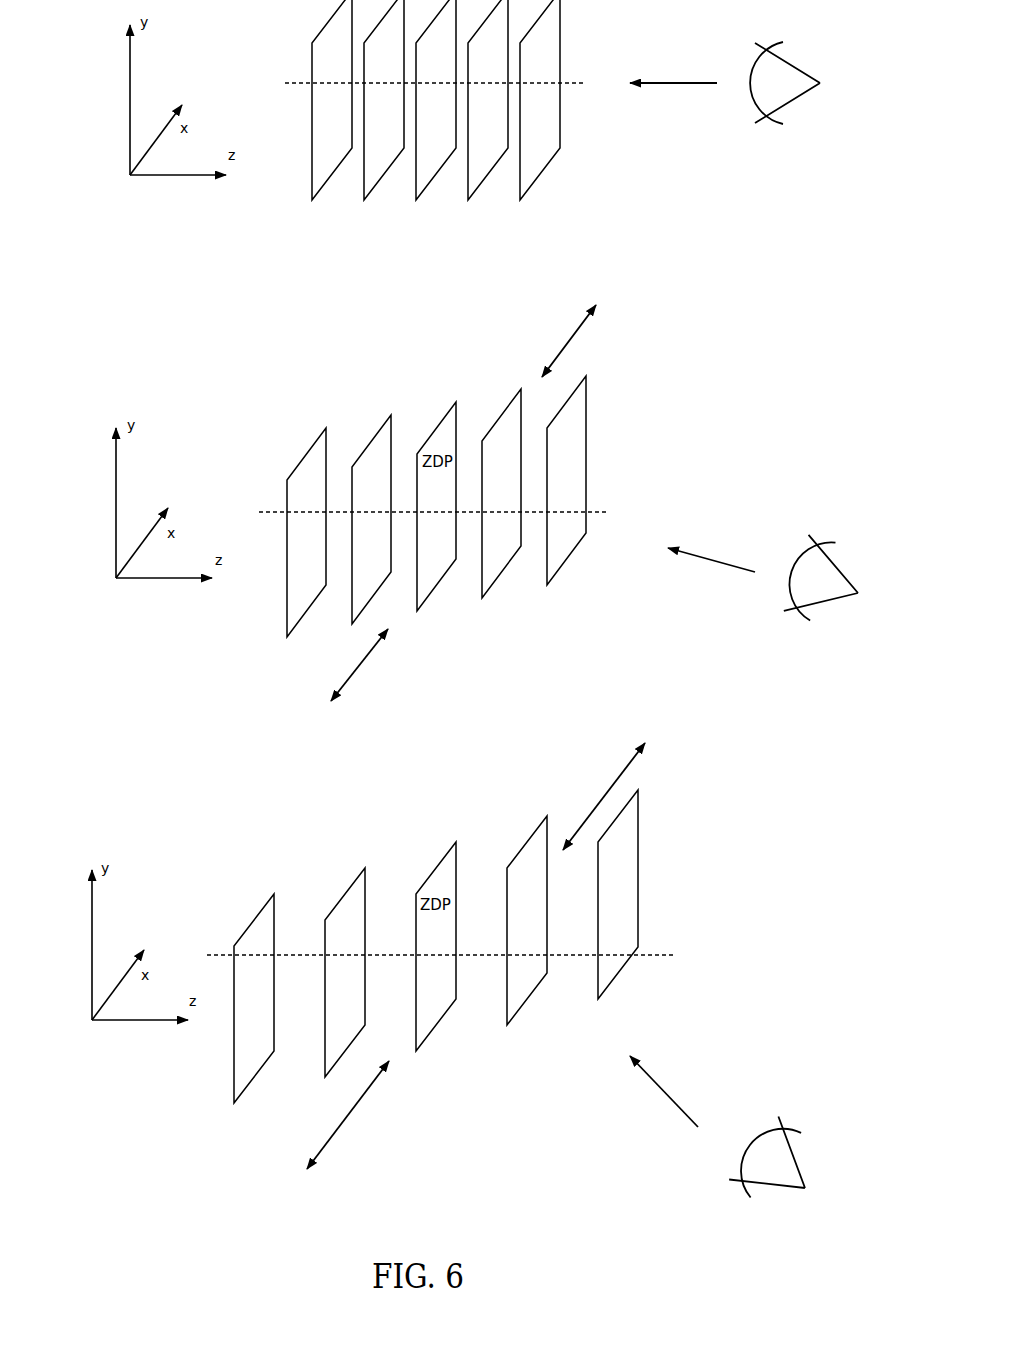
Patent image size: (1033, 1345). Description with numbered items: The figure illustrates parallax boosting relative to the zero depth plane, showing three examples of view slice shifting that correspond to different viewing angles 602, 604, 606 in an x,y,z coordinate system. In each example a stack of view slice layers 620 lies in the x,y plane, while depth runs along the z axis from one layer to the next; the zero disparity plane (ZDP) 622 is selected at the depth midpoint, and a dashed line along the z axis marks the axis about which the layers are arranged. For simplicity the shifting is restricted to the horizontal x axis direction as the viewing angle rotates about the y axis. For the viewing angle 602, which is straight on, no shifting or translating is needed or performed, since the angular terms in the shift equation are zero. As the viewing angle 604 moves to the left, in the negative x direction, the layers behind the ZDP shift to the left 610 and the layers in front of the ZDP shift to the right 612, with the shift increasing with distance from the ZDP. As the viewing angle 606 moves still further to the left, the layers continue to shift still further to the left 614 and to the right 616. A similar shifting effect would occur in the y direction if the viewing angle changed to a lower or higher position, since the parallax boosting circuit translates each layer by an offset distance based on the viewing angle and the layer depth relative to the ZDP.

The viewing angle 602 is at (725, 119).
The viewing angle 604 is at (766, 582).
The viewing angle 606 is at (730, 1138).
The shift to the left 610 is at (394, 668).
The shift to the right 612 is at (604, 345).
The shift to the left 614 is at (372, 1115).
The shift to the right 616 is at (592, 796).
The view slice layers 620 is at (393, 151).
The zero disparity plane (ZDP) 622 is at (436, 100).